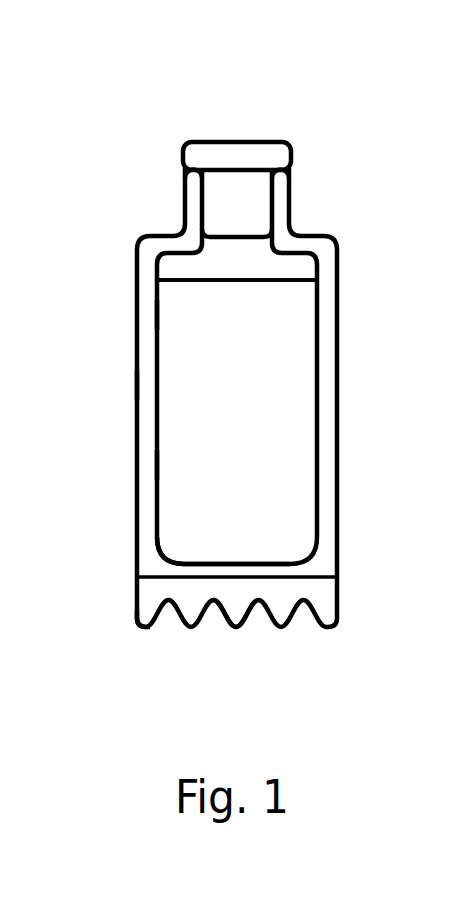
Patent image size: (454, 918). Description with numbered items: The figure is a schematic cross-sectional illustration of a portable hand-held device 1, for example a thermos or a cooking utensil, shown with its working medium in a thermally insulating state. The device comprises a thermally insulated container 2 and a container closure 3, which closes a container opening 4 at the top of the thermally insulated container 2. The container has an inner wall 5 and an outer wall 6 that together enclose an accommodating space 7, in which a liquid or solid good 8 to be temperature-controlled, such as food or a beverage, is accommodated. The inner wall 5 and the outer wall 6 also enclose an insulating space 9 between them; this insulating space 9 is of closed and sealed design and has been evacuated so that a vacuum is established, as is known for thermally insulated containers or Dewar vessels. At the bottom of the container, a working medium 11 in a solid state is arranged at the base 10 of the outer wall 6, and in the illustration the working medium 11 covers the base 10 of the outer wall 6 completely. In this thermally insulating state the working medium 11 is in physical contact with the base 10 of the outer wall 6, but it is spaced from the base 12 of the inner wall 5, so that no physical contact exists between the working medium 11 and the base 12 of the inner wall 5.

The portable hand-held device 1 is at (168, 128).
The thermally insulated container 2 is at (158, 251).
The container closure 3 is at (265, 162).
The container opening 4 is at (262, 249).
The inner wall 5 is at (154, 311).
The outer wall 6 is at (135, 382).
The accommodating space 7 is at (273, 358).
The good to be temperature-controlled 8 is at (195, 507).
The insulating space 9 is at (150, 465).
The base of the outer wall 10 is at (147, 630).
The working medium 11 is at (239, 603).
The base of the inner wall 12 is at (237, 563).